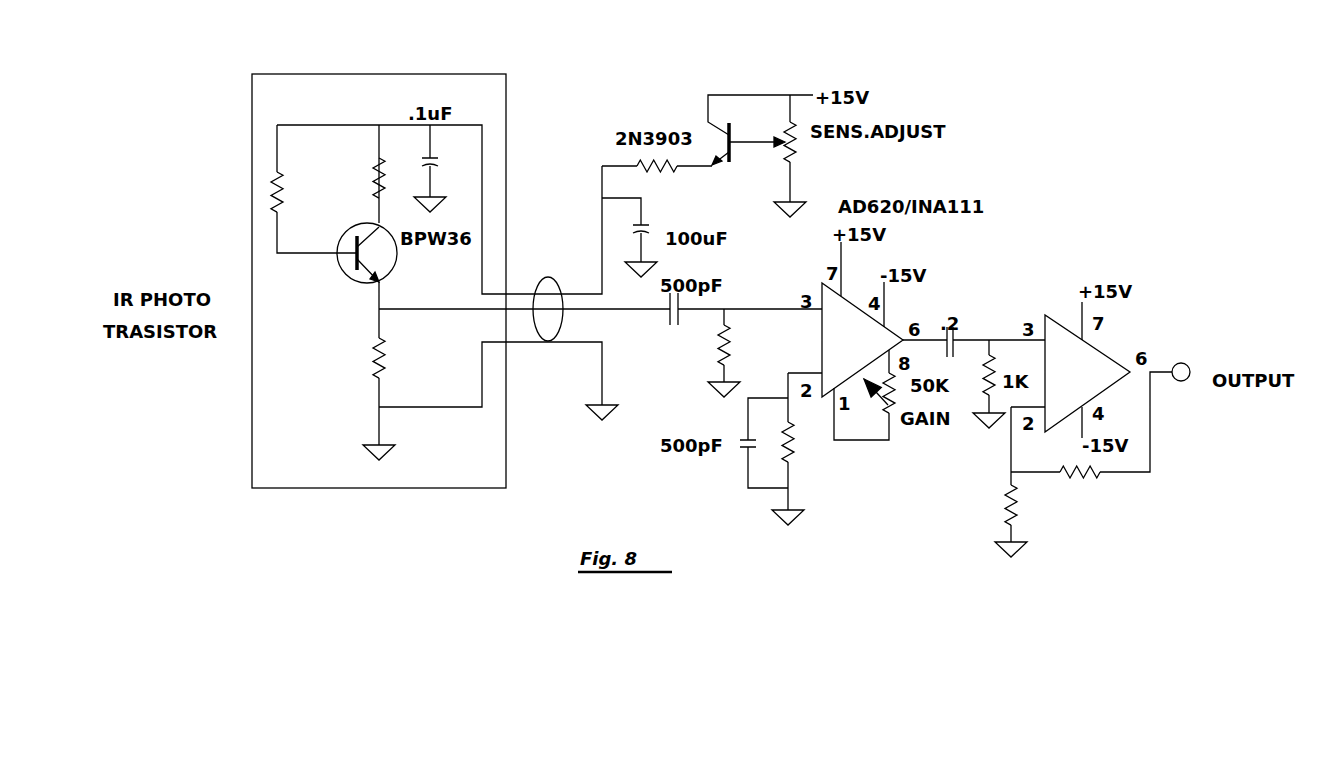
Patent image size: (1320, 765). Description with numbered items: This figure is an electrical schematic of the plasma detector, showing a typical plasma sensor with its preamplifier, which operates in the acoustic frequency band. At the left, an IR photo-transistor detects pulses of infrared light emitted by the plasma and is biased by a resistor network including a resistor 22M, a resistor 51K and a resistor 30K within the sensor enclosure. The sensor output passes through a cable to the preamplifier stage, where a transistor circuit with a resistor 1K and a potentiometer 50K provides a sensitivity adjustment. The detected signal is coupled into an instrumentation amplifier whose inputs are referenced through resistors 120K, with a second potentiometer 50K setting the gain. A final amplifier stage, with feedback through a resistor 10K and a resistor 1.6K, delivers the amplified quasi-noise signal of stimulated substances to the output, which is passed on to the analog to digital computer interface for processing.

The 22M resistor 22M is at (314, 189).
The 51K resistor 51K is at (356, 178).
The 30K resistor 30K is at (353, 358).
The 1K resistor 1K is at (657, 179).
The 50K potentiometer 50K is at (816, 148).
The 120K resistor 120K is at (753, 345).
The 10K resistor 10K is at (1080, 485).
The 1.6K resistor 1.6K is at (983, 505).